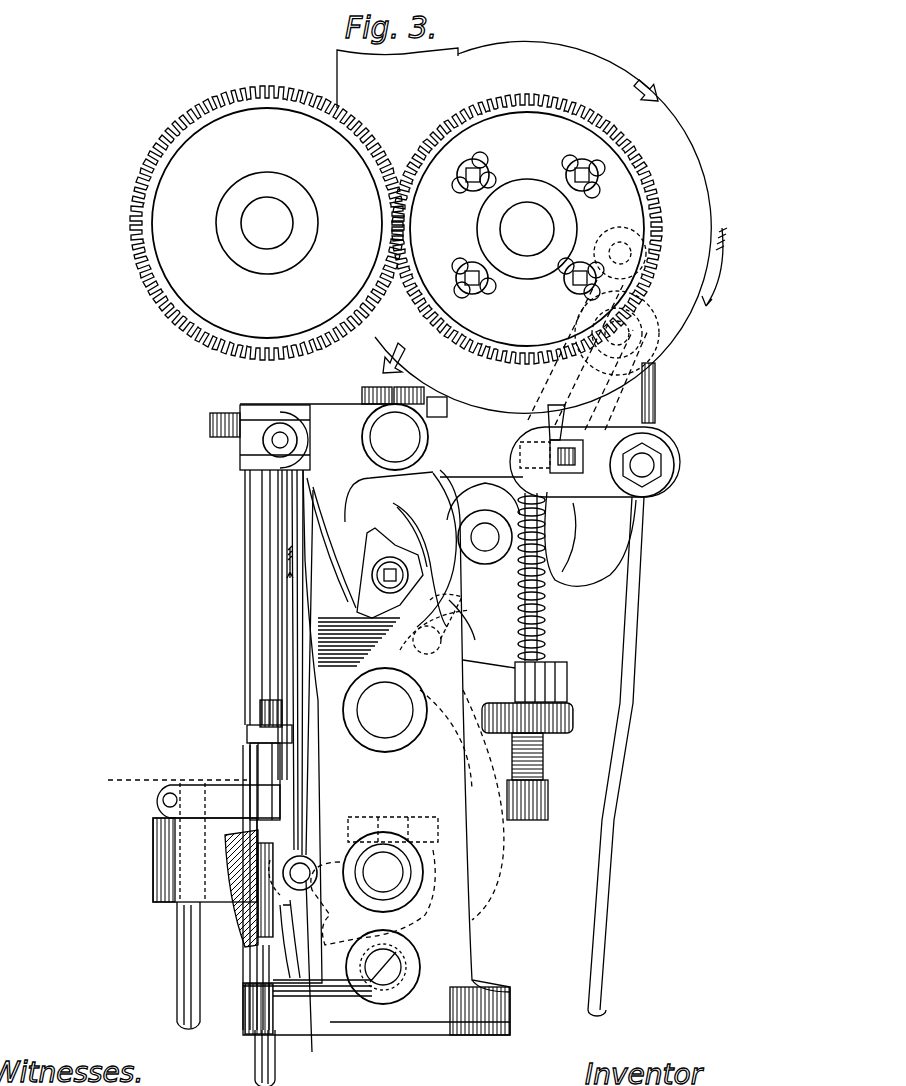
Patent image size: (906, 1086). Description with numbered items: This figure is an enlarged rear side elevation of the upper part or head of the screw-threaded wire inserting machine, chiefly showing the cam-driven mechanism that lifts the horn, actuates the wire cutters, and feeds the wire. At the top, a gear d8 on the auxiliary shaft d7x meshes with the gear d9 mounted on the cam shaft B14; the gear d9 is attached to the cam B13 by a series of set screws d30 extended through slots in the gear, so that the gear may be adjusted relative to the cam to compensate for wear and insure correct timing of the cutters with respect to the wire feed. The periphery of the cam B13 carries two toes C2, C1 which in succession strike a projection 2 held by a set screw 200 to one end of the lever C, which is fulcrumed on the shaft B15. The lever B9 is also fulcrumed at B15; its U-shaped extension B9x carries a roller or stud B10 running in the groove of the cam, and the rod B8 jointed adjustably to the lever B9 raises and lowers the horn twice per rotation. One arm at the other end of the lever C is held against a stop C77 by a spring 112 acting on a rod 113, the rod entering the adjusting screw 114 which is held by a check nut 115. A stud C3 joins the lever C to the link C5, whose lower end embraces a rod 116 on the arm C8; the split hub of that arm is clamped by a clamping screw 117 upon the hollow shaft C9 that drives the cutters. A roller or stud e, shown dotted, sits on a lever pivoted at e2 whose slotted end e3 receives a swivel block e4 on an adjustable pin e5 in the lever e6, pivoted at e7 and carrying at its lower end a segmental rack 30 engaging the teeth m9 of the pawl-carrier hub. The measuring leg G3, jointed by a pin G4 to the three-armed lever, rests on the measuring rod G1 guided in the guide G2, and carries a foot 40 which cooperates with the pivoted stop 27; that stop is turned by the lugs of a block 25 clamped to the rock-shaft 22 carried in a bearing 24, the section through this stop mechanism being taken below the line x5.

The gear wheel d8 is at (278, 84).
The auxiliary shaft d7x is at (275, 220).
The gear d9 is at (538, 98).
The cam shaft B14 is at (527, 229).
The set screws d30 is at (568, 172).
The cam B13 is at (688, 152).
The toe C2 is at (647, 86).
The toe C1 is at (398, 344).
The roller or stud e is at (620, 242).
The roller or stud B10 is at (620, 337).
The projection 2 is at (552, 412).
The U-shaped extension B9x is at (655, 405).
The lever C is at (327, 517).
The stud C3 is at (275, 443).
The pin G4 is at (214, 425).
The fulcrum shaft B15 is at (402, 426).
The link C5 is at (284, 570).
The measuring leg G3 is at (268, 656).
The stop C77 is at (360, 597).
The pivot stud e2 is at (485, 535).
The lever B9 is at (676, 466).
The set screw 200 is at (600, 446).
The rod B8 is at (637, 565).
The spring 112 is at (543, 630).
The rod 113 is at (544, 649).
The slot e3 is at (463, 598).
The swivel block e4 is at (450, 641).
The pin e5 is at (470, 667).
The check nut 115 is at (544, 718).
The adjusting screw 114 is at (547, 762).
The pivot e7 is at (385, 710).
The hollow rod or shaft C9 is at (385, 872).
The lever e6 is at (486, 890).
The clamping screw 117 is at (422, 818).
The segmental rack 30 is at (425, 946).
The teeth m9 is at (382, 985).
The rod 116 is at (300, 871).
The bearing 24 is at (160, 854).
The block 25 is at (156, 798).
The section line x5 is at (169, 776).
The rock-shaft 22 is at (180, 944).
The foot 40 is at (262, 762).
The stop 27 is at (268, 792).
The guide G2 is at (246, 964).
The measuring rod G1 is at (258, 1062).
The arm C8 is at (309, 777).